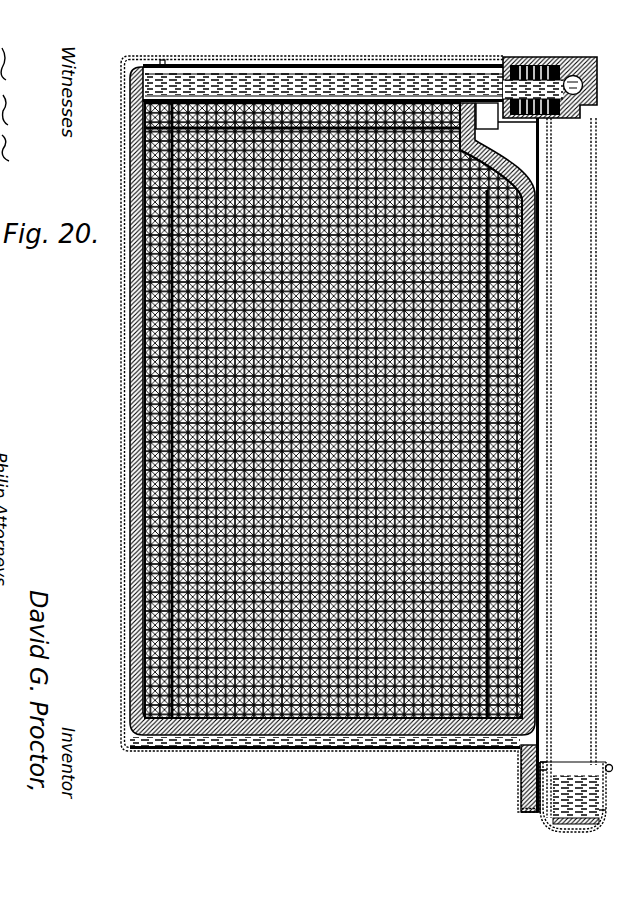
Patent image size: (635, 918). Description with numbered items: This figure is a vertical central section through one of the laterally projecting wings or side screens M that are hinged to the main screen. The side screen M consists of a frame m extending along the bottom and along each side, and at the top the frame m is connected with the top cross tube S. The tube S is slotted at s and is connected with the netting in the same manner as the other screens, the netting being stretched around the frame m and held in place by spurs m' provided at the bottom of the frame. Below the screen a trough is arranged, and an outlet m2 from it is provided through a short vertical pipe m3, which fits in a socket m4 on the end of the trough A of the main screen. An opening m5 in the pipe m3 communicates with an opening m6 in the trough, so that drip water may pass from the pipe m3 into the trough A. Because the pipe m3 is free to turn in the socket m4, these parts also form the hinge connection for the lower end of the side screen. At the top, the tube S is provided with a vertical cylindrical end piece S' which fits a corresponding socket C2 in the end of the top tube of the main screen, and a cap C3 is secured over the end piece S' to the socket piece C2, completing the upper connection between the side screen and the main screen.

The side screen M is at (302, 441).
The top cross tube S is at (323, 66).
The slot s is at (436, 78).
The vertical cylindrical end piece S' is at (550, 75).
The socket C2 is at (580, 110).
The cap C3 is at (572, 60).
The frame m is at (325, 756).
The spurs m' is at (332, 419).
The outlet m2 is at (517, 790).
The short vertical pipe m3 is at (523, 813).
The socket m4 is at (521, 806).
The opening m5 is at (563, 823).
The opening m6 is at (603, 815).
The trough A is at (571, 808).